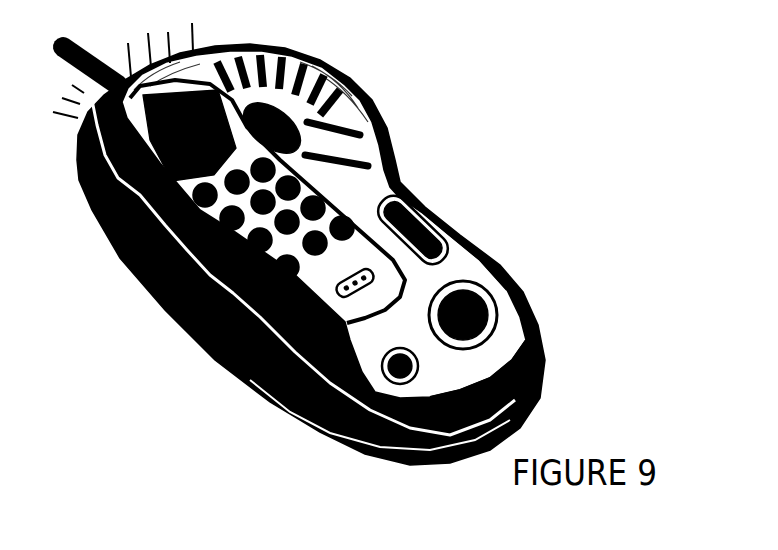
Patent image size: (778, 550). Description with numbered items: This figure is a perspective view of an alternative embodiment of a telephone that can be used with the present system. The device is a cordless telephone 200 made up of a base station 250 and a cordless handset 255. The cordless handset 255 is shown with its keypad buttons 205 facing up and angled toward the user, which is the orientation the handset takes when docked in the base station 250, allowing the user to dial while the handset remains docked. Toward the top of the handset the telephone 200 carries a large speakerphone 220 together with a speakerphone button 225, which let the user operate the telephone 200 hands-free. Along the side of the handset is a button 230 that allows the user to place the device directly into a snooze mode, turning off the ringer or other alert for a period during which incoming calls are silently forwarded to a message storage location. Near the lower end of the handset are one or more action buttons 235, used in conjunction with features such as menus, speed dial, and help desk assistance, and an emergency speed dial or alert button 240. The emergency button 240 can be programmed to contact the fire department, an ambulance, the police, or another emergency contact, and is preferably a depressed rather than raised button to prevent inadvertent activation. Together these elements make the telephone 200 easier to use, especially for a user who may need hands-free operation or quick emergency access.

The cordless telephone 200 is at (540, 251).
The keypad buttons 205 is at (230, 247).
The speakerphone 220 is at (373, 103).
The speakerphone button 225 is at (350, 80).
The button 230 is at (442, 218).
The action buttons 235 is at (490, 307).
The emergency speed dial or alert buttons 240 is at (400, 378).
The base station 250 is at (493, 360).
The cordless handset 255 is at (457, 228).